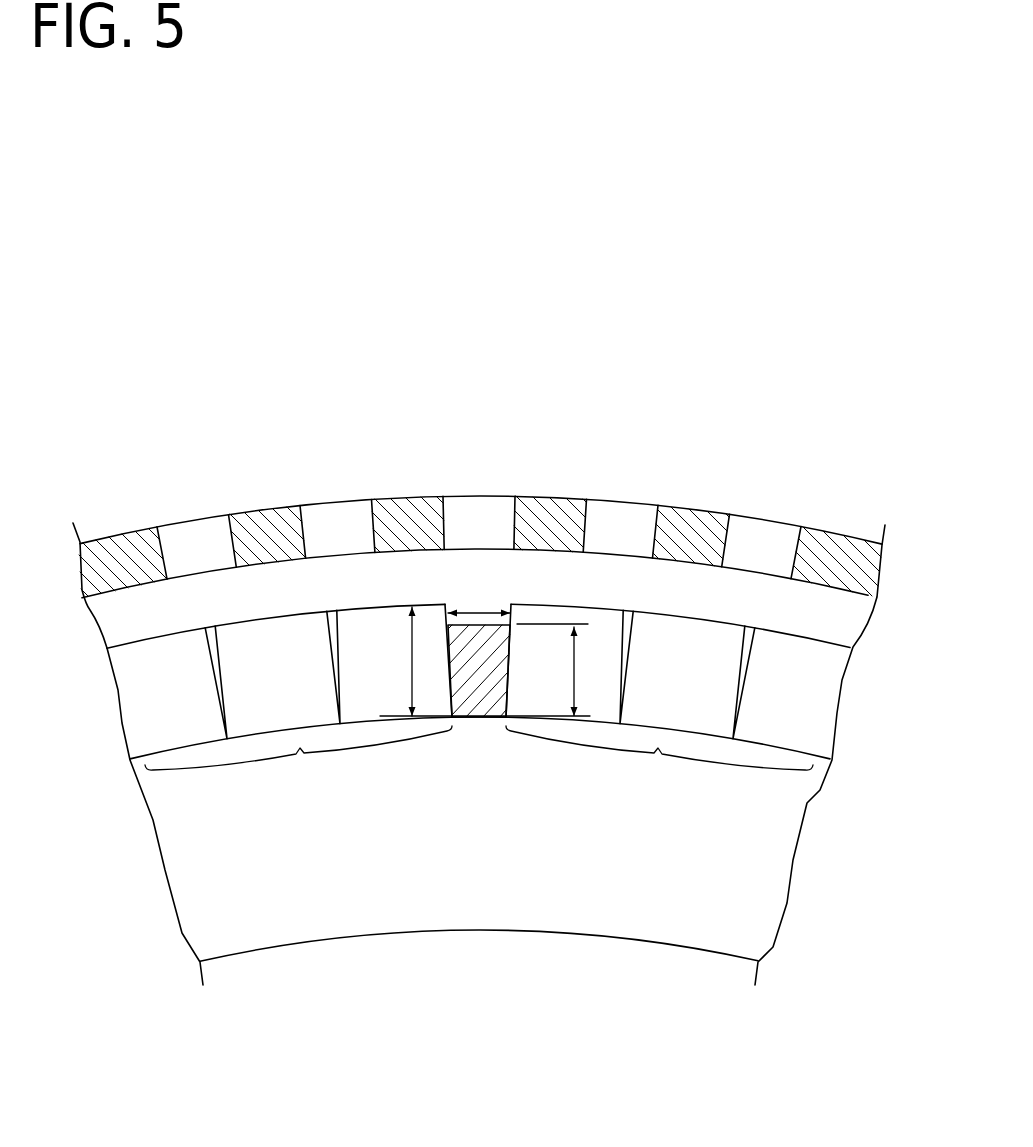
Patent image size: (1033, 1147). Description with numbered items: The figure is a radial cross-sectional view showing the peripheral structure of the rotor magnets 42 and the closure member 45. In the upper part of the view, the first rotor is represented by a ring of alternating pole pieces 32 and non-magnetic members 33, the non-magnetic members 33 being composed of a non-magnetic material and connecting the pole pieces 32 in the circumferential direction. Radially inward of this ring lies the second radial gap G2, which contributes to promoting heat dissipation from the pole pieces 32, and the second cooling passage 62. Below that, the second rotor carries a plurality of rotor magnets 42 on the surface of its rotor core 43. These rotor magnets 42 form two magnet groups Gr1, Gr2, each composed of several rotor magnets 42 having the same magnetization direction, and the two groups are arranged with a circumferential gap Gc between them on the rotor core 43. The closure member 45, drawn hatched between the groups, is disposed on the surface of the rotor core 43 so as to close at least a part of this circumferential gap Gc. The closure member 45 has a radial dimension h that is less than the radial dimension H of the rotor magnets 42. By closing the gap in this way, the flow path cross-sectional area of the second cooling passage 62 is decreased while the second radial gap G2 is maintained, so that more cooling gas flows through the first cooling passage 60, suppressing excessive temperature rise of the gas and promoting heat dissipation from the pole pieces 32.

The first cooling passage 60 is at (830, 492).
The second cooling passage 62 is at (850, 617).
The pole piece 32 is at (477, 510).
The non-magnetic member 33 is at (550, 510).
The second radial gap G2 is at (613, 580).
The rotor magnet 42 is at (830, 700).
The rotor core 43 is at (783, 860).
The closure member 45 is at (480, 700).
The circumferential gap Gc is at (479, 597).
The radial dimension of the rotor magnets H is at (398, 661).
The radial dimension of the closure member h is at (490, 670).
The first magnet group Gr1 is at (298, 759).
The second magnet group Gr2 is at (659, 759).